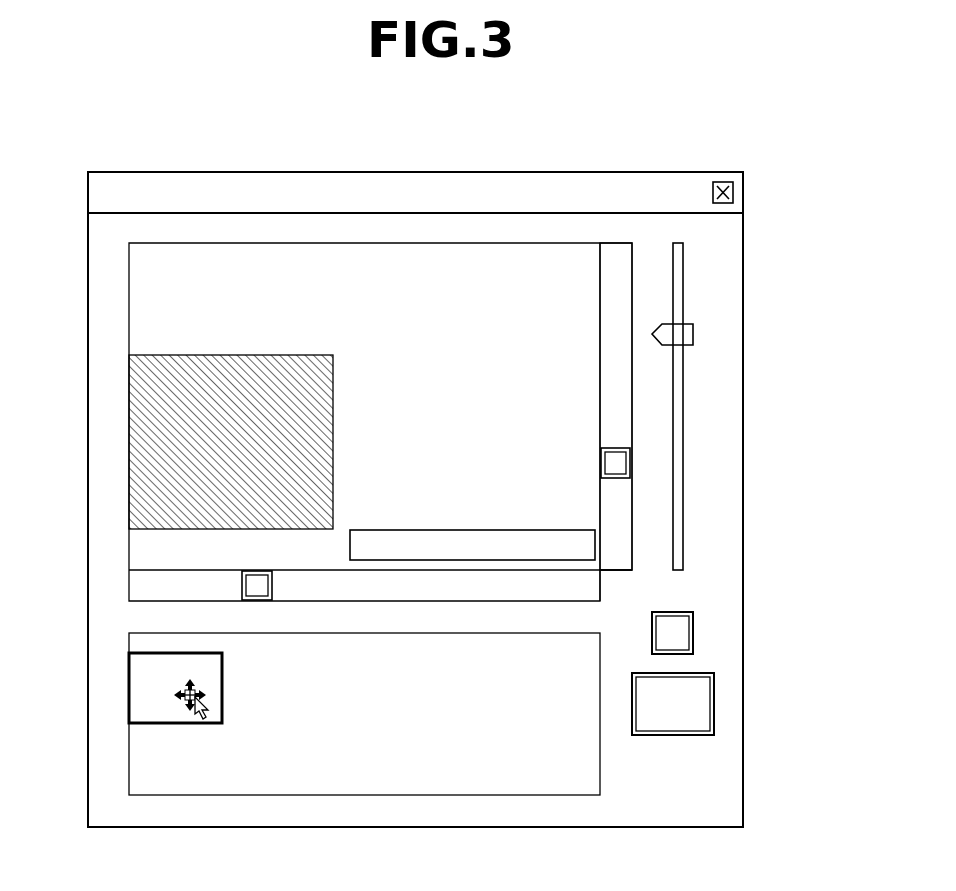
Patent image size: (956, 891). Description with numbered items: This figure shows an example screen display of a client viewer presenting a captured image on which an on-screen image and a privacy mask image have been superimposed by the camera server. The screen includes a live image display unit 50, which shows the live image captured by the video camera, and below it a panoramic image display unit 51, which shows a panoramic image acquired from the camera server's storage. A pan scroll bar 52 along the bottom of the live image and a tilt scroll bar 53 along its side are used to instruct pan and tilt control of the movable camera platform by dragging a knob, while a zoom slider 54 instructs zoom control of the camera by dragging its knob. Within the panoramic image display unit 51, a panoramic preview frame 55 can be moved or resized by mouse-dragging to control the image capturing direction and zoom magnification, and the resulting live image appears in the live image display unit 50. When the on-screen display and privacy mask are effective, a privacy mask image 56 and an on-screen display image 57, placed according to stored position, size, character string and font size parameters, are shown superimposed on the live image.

The live image display unit 50 is at (455, 243).
The panoramic image display unit 51 is at (330, 795).
The pan scroll bar 52 is at (377, 601).
The tilt scroll bar 53 is at (620, 400).
The zoom slider 54 is at (683, 333).
The panoramic preview frame 55 is at (175, 723).
The privacy mask image 56 is at (225, 354).
The on-screen display image 57 is at (475, 530).